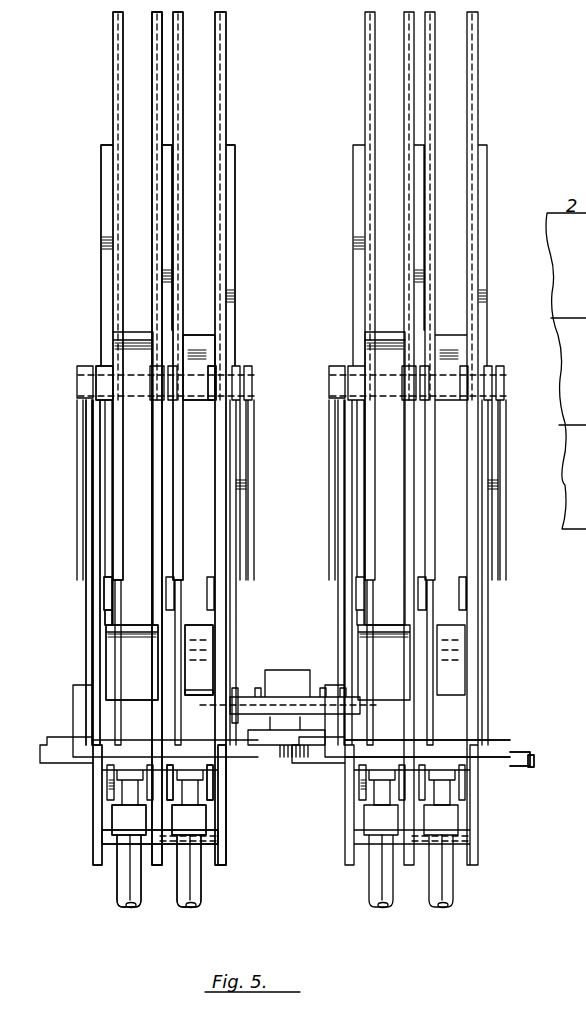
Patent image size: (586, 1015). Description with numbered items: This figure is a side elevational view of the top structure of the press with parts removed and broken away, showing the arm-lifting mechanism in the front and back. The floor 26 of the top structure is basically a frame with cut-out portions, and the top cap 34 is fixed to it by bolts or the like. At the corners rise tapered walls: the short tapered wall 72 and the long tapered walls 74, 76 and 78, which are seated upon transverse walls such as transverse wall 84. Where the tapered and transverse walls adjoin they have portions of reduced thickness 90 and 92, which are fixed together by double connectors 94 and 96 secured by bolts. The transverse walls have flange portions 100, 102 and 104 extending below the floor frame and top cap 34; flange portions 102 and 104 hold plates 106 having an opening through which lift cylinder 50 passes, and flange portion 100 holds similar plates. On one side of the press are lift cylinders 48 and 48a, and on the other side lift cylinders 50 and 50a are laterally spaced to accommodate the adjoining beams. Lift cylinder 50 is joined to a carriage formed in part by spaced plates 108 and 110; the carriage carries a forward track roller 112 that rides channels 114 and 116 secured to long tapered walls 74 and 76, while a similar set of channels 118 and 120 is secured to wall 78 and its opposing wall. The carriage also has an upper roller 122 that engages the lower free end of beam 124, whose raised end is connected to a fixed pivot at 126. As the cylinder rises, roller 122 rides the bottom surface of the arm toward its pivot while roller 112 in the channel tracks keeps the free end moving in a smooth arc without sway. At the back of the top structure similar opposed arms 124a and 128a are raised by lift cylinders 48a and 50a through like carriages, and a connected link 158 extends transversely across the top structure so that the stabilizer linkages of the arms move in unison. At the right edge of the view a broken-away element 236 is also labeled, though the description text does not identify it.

The channel 118 is at (128, 74).
The channel 120 is at (150, 108).
The channel 116 is at (183, 92).
The channel 114 is at (208, 136).
The long tapered wall 74 is at (165, 282).
The long tapered wall 76 is at (228, 282).
The long tapered wall 78 is at (101, 306).
The beam 124 is at (205, 345).
The fixed pivot 126 is at (226, 364).
The short tapered wall 72 is at (100, 492).
The portion of reduced thickness 90 is at (100, 575).
The double connector 96 is at (108, 592).
The double connector 94 is at (93, 590).
The portion of reduced thickness 92 is at (98, 607).
The transverse wall 84 is at (98, 660).
The plate 108 is at (175, 747).
The forward track roller 112 is at (205, 747).
The plate 110 is at (198, 752).
The upper roller 122 is at (200, 720).
The connected link 158 is at (300, 705).
The flange portion 100 is at (93, 852).
The plate 106 is at (214, 848).
The flange portion 104 is at (223, 868).
The lift cylinder 48 is at (128, 906).
The flange portion 102 is at (162, 868).
The lift cylinder 50 is at (190, 908).
The opposed arm 128a is at (336, 478).
The opposed arm 124a is at (504, 660).
The floor 26 is at (523, 754).
The top cap 34 is at (529, 772).
The support 236 is at (556, 347).
The lift cylinder 48a is at (398, 877).
The lift cylinder 50a is at (470, 865).